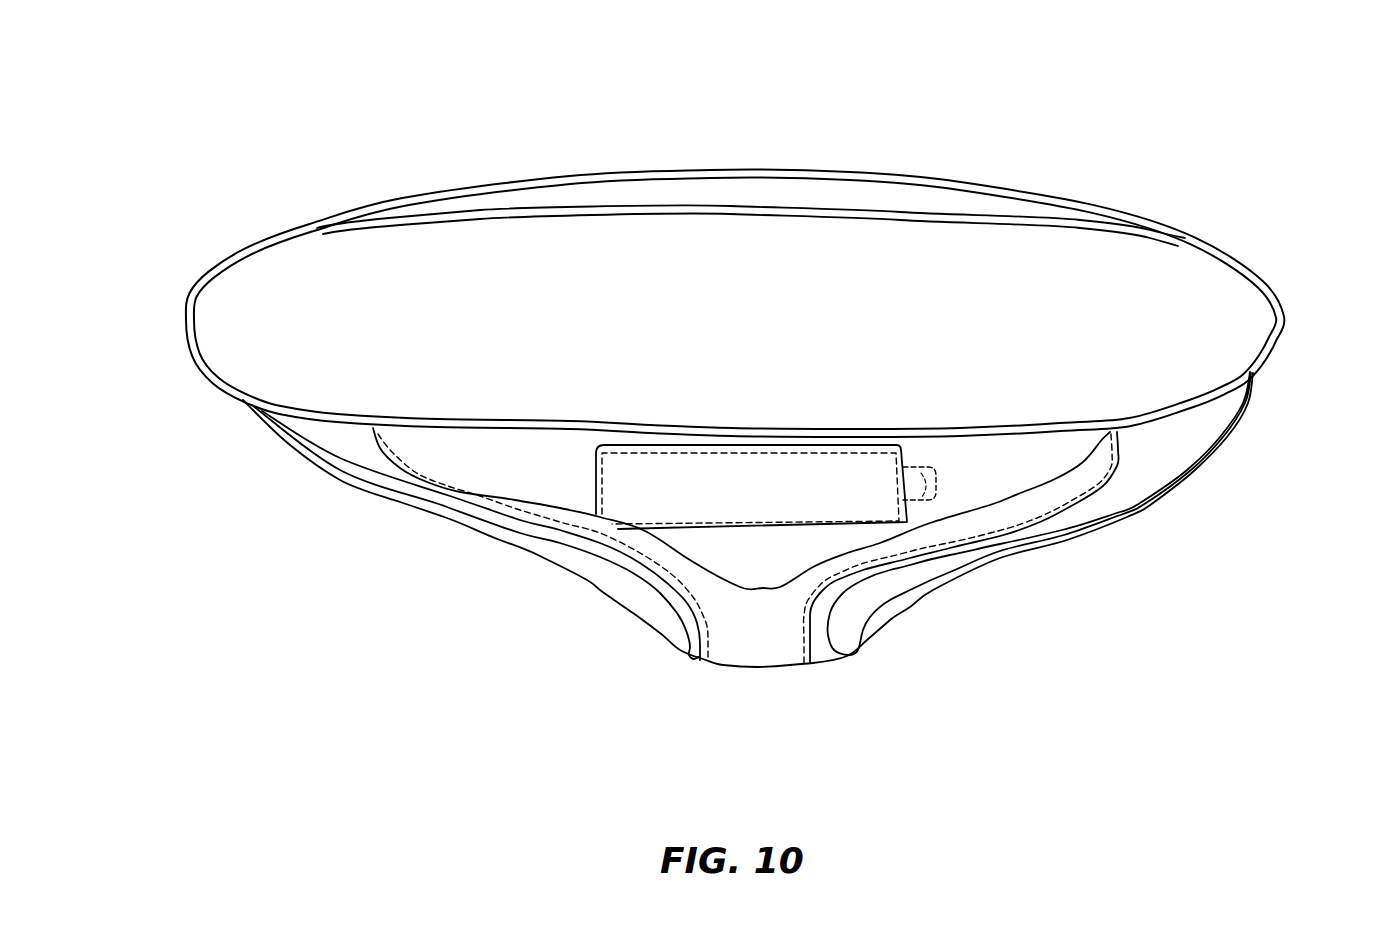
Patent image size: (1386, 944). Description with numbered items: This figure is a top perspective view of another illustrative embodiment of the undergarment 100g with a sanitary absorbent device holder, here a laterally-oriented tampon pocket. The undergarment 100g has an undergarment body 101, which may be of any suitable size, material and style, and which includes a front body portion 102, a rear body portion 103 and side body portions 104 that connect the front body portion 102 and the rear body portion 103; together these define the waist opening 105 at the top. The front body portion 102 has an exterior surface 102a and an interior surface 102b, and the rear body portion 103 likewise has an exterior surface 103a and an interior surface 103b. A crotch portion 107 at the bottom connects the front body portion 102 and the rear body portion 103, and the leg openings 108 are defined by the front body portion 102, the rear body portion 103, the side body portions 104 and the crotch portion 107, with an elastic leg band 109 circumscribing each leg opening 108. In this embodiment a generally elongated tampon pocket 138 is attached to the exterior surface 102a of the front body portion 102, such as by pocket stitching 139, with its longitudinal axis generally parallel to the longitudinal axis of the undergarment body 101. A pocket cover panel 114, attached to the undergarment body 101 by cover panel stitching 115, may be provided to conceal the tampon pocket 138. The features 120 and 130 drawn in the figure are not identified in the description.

The undergarment 100g is at (469, 108).
The undergarment body 101 is at (1270, 264).
The front body portion 102 is at (455, 434).
The exterior surface of the front body portion 102a is at (545, 443).
The interior surface of the front body portion 102b is at (408, 421).
The rear body portion 103 is at (576, 216).
The exterior surface of the rear body portion 103a is at (713, 185).
The interior surface of the rear body portion 103b is at (800, 214).
The side body portions 104 is at (185, 330).
The waist opening 105 is at (238, 286).
The crotch portion 107 is at (830, 618).
The leg openings 108 is at (584, 586).
The elastic leg band 109 is at (671, 610).
The pocket cover panel 114 is at (737, 638).
The cover panel stitching 115 is at (803, 642).
The fastening tab 120 is at (937, 470).
The absorbent core 130 is at (652, 490).
The tampon pocket 138 is at (803, 486).
The pocket stitching 139 is at (723, 452).